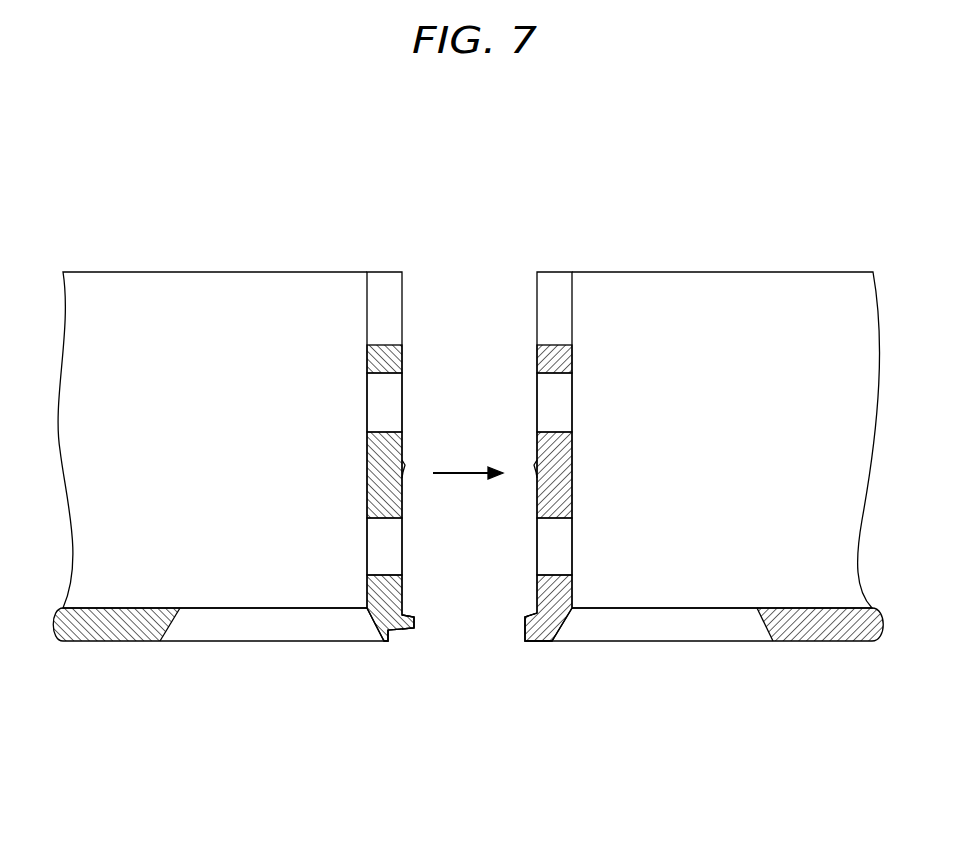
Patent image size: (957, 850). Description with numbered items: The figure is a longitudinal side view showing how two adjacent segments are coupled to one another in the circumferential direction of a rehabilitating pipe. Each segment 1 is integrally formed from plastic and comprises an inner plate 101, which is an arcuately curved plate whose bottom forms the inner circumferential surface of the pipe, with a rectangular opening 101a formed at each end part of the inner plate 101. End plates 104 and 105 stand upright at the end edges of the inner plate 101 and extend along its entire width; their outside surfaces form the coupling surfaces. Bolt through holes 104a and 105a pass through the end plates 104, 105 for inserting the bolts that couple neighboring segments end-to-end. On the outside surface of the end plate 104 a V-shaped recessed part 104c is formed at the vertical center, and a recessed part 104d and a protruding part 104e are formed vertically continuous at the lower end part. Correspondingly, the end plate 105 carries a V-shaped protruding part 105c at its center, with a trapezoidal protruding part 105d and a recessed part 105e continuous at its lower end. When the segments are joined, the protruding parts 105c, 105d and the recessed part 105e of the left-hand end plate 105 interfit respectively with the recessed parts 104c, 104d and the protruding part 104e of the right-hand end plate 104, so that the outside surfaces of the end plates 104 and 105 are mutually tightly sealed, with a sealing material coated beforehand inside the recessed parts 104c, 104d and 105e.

The segment 1 is at (107, 288).
The inner plate 101 is at (80, 637).
The rectangular opening 101a is at (275, 628).
The end plate 104 is at (552, 288).
The bolt through hole 104a is at (550, 398).
The recessed part (groove) 104c is at (537, 468).
The recessed part (groove) 104d is at (527, 622).
The protruding part 104e is at (524, 643).
The end plate 105 is at (384, 288).
The bolt through hole 105a is at (380, 400).
The protruding part 105c is at (405, 471).
The protruding part 105d is at (415, 616).
The recessed part 105e is at (392, 641).